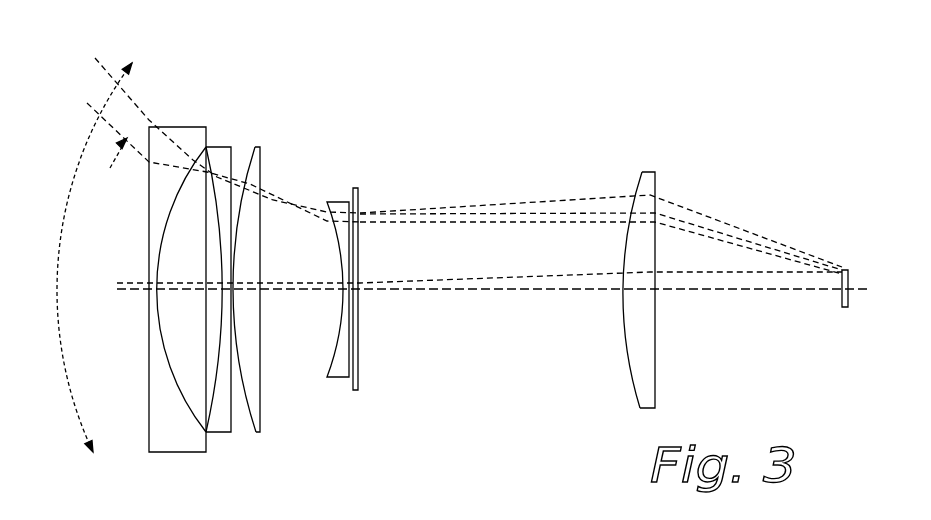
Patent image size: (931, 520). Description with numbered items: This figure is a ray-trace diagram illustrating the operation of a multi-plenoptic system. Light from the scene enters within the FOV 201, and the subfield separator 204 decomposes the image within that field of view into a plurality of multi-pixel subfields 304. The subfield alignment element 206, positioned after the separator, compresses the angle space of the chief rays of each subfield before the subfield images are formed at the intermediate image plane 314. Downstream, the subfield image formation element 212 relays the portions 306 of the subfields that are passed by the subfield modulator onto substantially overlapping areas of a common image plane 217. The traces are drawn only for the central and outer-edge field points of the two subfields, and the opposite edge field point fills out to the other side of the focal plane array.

The FOV 201 is at (87, 151).
The multi-pixel subfields 304 is at (142, 112).
The subfield separator 204 is at (231, 147).
The subfield alignment element 206 is at (260, 147).
The intermediate image plane 314 is at (392, 443).
The portions of the subfields 306 is at (557, 207).
The subfield image formation element 212 is at (655, 172).
The common image plane 217 is at (845, 270).